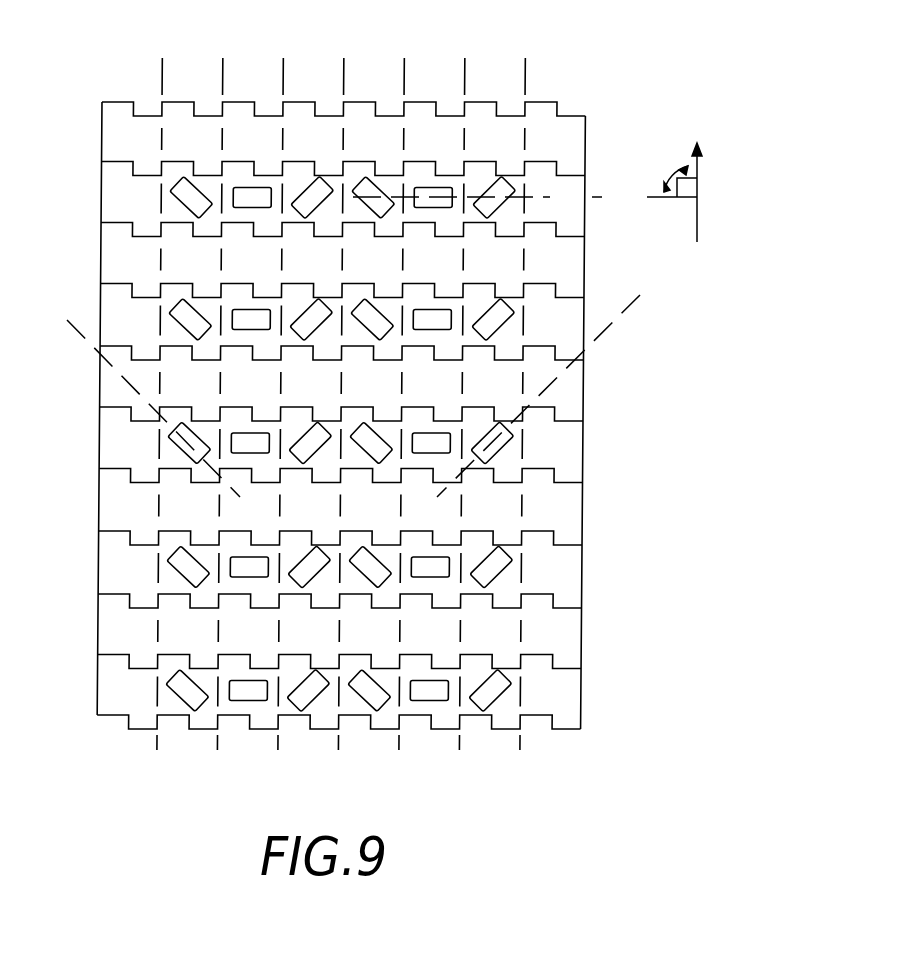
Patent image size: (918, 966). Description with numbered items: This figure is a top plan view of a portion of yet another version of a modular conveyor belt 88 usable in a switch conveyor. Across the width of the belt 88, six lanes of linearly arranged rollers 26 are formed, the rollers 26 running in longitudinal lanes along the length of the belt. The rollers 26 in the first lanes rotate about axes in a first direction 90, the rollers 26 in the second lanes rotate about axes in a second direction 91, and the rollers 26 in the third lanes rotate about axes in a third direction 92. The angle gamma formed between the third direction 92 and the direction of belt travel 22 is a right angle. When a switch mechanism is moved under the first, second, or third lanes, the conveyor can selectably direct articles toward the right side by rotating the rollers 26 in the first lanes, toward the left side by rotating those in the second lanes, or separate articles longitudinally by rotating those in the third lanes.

The belt 88 is at (622, 388).
The rollers 26 is at (493, 569).
The first direction 90 is at (77, 332).
The second direction 91 is at (641, 294).
The third direction 92 is at (608, 197).
The direction of belt travel 22 is at (699, 172).